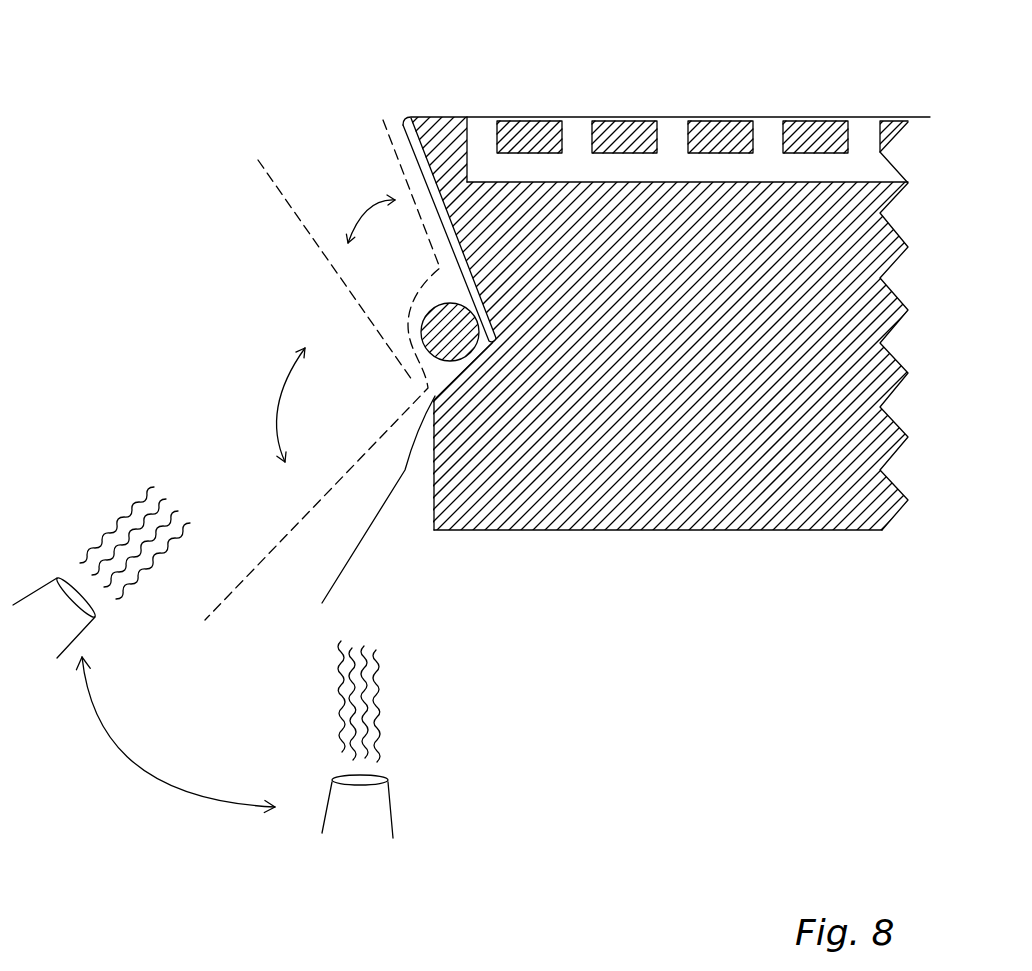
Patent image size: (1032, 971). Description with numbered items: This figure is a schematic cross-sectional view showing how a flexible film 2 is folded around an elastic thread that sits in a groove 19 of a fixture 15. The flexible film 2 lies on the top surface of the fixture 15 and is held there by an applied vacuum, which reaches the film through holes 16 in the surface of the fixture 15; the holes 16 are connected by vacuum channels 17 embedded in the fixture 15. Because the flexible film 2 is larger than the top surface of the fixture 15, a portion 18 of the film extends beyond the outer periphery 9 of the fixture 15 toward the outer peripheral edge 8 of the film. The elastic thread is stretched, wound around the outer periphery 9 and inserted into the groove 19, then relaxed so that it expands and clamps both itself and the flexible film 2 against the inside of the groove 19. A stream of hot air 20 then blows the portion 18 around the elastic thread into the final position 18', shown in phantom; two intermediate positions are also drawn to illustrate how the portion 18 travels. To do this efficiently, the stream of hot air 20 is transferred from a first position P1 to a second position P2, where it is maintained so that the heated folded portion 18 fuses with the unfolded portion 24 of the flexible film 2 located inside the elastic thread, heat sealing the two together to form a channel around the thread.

The flexible film 2 is at (648, 115).
The outer peripheral edge 8 is at (433, 581).
The outer periphery 9 is at (372, 186).
The fixture 15 is at (626, 530).
The holes 16 is at (570, 128).
The vacuum channels 17 is at (750, 173).
The portion of the flexible film 18 is at (413, 559).
The final position of the folded portion 18' is at (322, 349).
The groove 19 is at (432, 380).
The stream of hot air 20 is at (123, 588).
The unfolded portion of the flexible film 24 is at (436, 200).
The first position P1 is at (355, 840).
The second position P2 is at (28, 583).